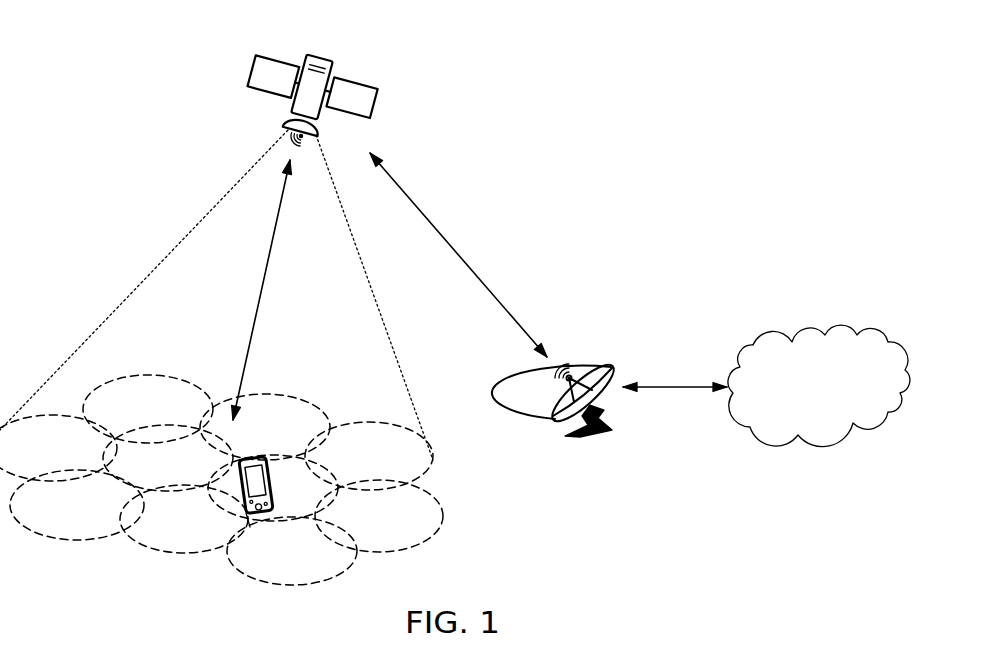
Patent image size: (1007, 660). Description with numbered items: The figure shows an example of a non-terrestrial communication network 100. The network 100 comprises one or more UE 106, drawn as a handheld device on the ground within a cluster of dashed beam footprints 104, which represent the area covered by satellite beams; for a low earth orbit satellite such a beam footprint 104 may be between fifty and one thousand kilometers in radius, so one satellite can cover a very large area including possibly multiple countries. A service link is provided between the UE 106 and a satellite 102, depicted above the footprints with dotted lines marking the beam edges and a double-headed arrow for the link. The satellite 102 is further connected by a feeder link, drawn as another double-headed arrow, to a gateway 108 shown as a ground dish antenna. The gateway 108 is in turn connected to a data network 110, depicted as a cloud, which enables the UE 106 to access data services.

The non-terrestrial communication network 100 is at (152, 77).
The satellite 102 is at (313, 56).
The beam footprint 104 is at (403, 533).
The UE 106 is at (264, 456).
The gateway 108 is at (611, 366).
The data network 110 is at (807, 333).